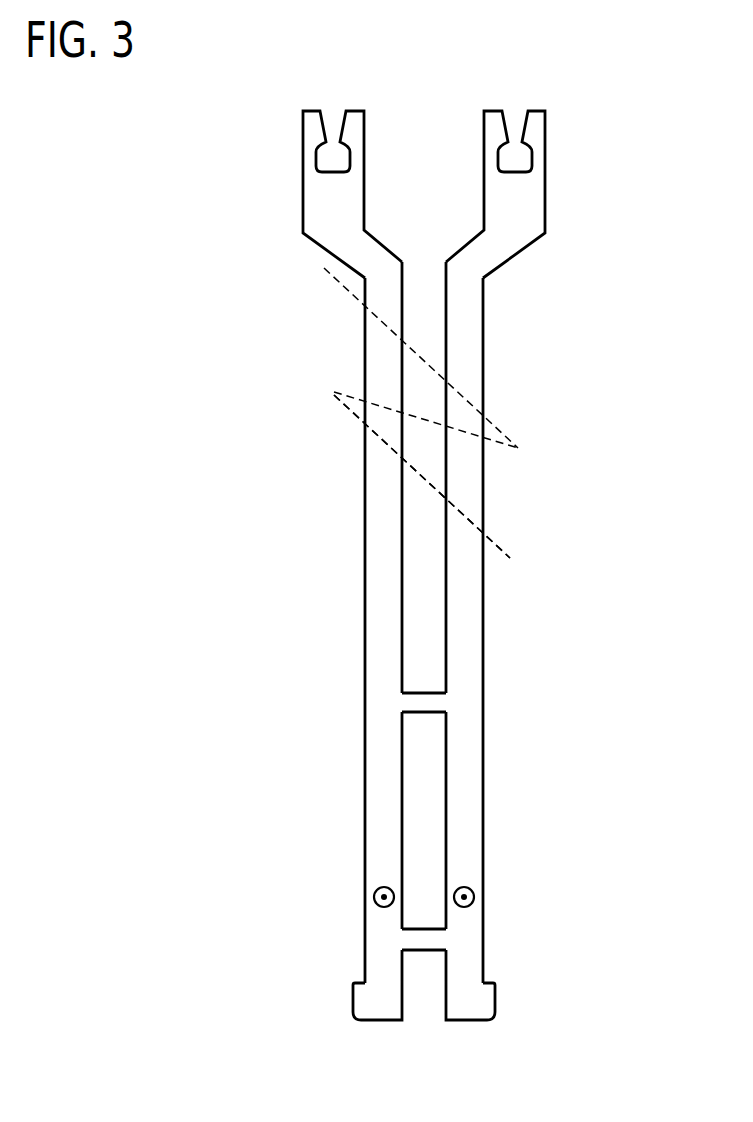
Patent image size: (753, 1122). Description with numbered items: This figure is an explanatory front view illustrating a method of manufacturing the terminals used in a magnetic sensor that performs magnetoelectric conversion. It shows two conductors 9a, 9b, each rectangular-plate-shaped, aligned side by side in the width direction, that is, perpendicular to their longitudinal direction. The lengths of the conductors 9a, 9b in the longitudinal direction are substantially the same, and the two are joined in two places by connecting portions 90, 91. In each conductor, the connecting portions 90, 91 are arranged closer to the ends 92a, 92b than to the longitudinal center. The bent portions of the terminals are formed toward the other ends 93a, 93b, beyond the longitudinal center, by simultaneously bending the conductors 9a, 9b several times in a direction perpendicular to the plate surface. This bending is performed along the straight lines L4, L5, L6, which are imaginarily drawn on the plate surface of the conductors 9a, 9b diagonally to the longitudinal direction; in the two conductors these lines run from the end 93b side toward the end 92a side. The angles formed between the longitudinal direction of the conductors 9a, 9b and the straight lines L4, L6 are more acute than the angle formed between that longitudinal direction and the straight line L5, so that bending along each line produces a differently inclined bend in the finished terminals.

The conductor 9a is at (483, 793).
The conductor 9b is at (366, 793).
The connecting portion 90 is at (437, 940).
The connecting portion 91 is at (437, 703).
The end 92a is at (495, 993).
The end 92b is at (360, 993).
The other end 93a is at (533, 198).
The other end 93b is at (316, 195).
The straight line L4 is at (449, 489).
The straight line L5 is at (402, 463).
The straight line L6 is at (396, 349).